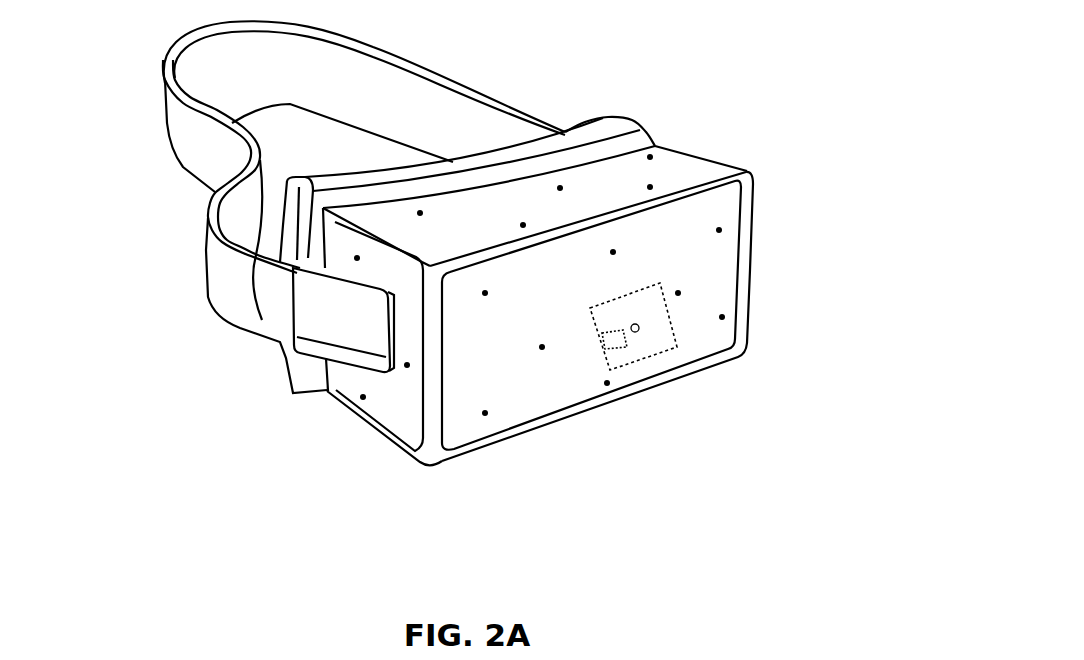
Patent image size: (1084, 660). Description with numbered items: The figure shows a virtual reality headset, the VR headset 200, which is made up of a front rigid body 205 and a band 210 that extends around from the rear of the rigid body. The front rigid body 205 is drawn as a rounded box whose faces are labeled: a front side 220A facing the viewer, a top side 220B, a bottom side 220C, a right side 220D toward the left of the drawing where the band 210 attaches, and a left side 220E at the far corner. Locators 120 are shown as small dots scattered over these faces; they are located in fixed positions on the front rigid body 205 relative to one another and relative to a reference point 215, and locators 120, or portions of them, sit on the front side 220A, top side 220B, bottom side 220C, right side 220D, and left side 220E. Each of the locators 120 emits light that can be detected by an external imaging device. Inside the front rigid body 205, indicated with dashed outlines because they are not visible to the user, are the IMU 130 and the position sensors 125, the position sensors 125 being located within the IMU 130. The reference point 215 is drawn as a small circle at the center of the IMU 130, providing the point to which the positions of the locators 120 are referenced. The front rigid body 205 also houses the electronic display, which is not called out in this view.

The VR headset 200 is at (43, 23).
The band 210 is at (465, 88).
The front rigid body 205 is at (518, 309).
The front side 220A is at (473, 433).
The top side 220B is at (397, 213).
The bottom side 220C is at (358, 437).
The right side 220D is at (399, 400).
The left side 220E is at (723, 155).
The locators 120 is at (727, 310).
The position sensors 125 is at (611, 353).
The IMU 130 is at (690, 346).
The reference point 215 is at (638, 336).